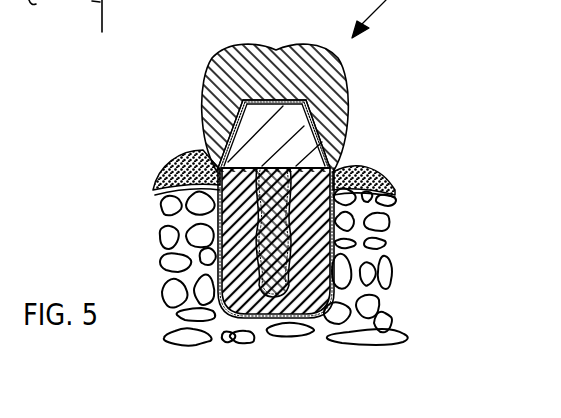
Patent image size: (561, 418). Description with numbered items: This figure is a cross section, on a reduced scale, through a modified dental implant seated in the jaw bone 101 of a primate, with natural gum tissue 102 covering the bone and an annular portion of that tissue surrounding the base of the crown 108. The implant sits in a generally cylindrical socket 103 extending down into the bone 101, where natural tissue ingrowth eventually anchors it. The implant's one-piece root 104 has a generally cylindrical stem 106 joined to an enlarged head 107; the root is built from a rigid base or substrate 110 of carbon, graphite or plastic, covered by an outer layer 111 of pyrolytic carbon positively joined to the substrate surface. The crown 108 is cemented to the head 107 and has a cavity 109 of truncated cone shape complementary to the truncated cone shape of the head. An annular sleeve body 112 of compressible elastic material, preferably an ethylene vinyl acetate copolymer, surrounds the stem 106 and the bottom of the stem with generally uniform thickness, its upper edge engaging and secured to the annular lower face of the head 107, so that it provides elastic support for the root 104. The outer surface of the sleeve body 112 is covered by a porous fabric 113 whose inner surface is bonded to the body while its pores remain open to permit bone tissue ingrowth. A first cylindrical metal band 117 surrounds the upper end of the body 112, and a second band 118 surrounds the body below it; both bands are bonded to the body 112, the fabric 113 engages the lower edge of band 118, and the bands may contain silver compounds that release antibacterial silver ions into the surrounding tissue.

The jaw bone 101 is at (377, 333).
The gum tissue 102 is at (377, 168).
The socket 103 is at (222, 260).
The root 104 is at (298, 242).
The stem 106 is at (219, 224).
The head 107 is at (292, 115).
The crown 108 is at (207, 76).
The cavity 109 is at (205, 122).
The substrate 110 is at (298, 137).
The outer layer 111 is at (323, 133).
The sleeve body 112 is at (232, 296).
The porous fabric 113 is at (262, 318).
The first metal band 117 is at (173, 180).
The second band 118 is at (366, 222).